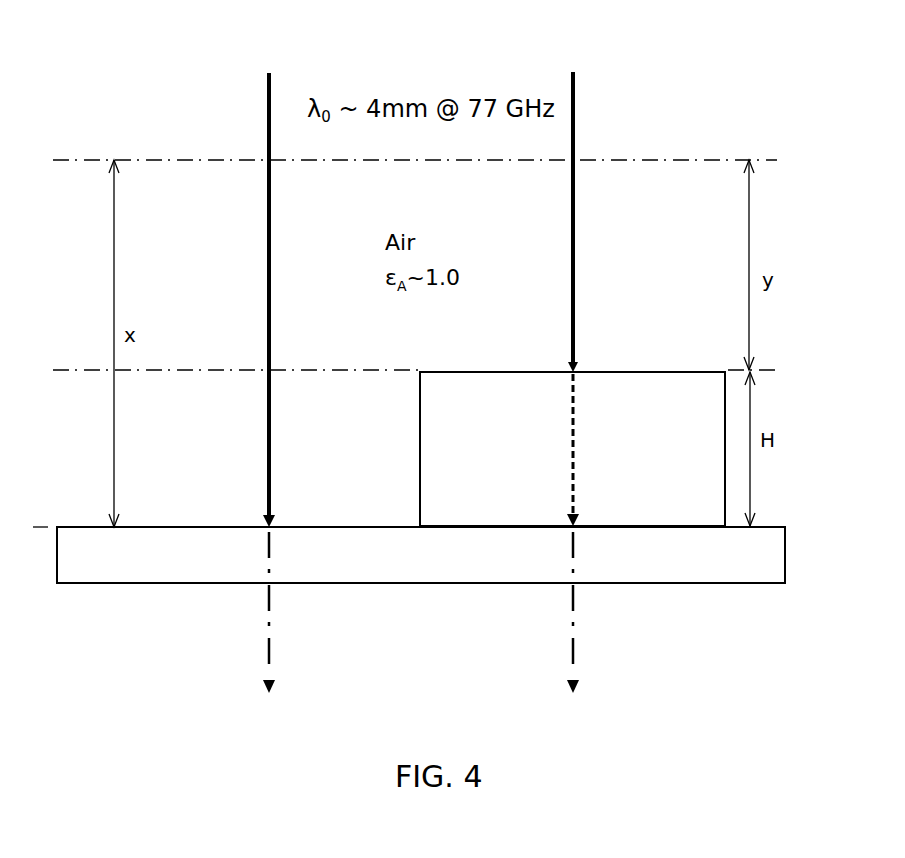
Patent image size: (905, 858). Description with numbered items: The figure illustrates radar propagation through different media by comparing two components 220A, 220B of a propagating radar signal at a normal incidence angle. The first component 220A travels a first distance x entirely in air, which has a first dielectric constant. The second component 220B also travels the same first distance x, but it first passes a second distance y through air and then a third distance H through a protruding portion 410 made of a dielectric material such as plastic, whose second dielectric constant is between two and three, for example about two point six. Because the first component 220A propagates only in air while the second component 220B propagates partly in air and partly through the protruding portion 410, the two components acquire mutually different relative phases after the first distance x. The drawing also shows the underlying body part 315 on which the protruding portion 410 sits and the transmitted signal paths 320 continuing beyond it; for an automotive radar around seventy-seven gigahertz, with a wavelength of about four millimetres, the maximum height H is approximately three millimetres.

The first component 220A is at (275, 279).
The second component 220B is at (578, 281).
The protruding portion 410 is at (572, 449).
The substrate / plate 315 is at (409, 555).
The transmitted beams 320 is at (413, 632).